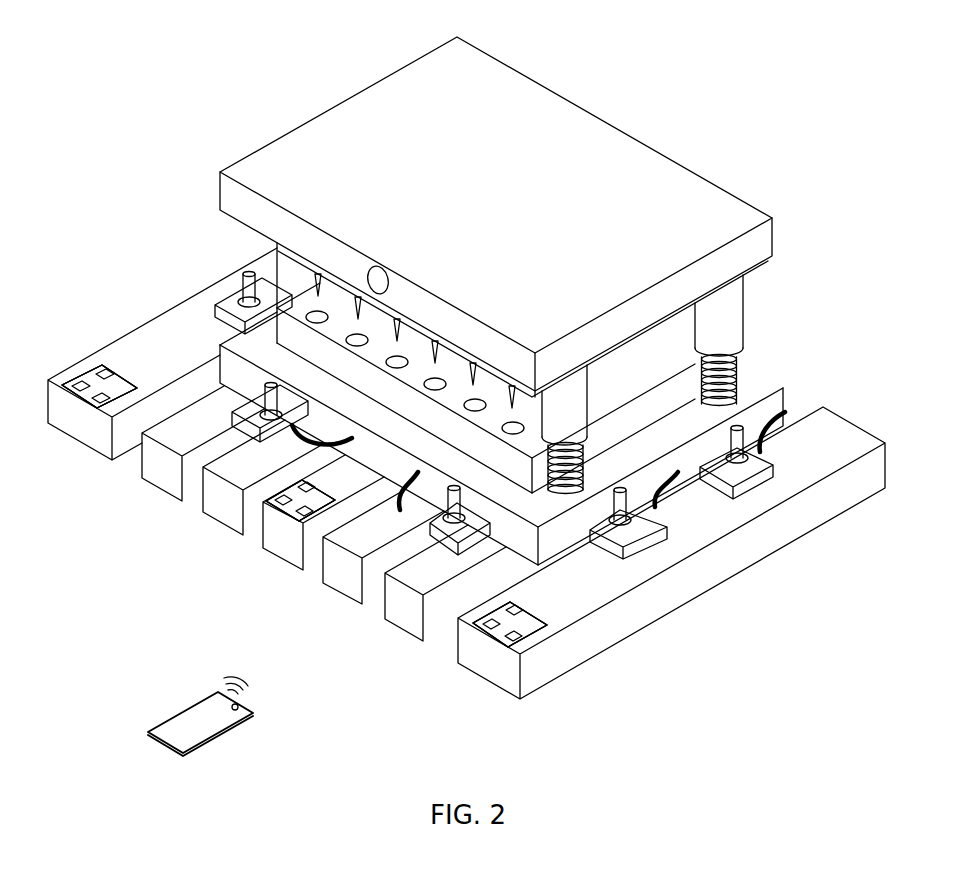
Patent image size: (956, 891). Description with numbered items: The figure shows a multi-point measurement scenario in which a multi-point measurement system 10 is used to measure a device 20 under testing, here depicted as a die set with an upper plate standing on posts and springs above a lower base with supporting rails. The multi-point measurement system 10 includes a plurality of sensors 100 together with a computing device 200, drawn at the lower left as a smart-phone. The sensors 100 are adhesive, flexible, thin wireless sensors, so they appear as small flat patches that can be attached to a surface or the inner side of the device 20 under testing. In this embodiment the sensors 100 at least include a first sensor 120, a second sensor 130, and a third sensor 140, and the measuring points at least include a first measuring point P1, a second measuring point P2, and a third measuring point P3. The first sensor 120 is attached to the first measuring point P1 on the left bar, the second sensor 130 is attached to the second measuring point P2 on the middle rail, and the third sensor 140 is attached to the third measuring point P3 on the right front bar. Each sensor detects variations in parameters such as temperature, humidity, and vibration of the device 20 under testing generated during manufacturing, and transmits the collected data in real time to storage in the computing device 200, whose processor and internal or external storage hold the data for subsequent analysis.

The multi-point measurement system 10 is at (133, 48).
The device under testing 20 is at (662, 221).
The sensors 100 is at (287, 563).
The first sensor 120 is at (82, 400).
The second sensor 130 is at (290, 508).
The third sensor 140 is at (497, 637).
The first measuring point P1 is at (118, 403).
The second measuring point P2 is at (320, 515).
The third measuring point P3 is at (525, 637).
The computing device 200 is at (207, 730).